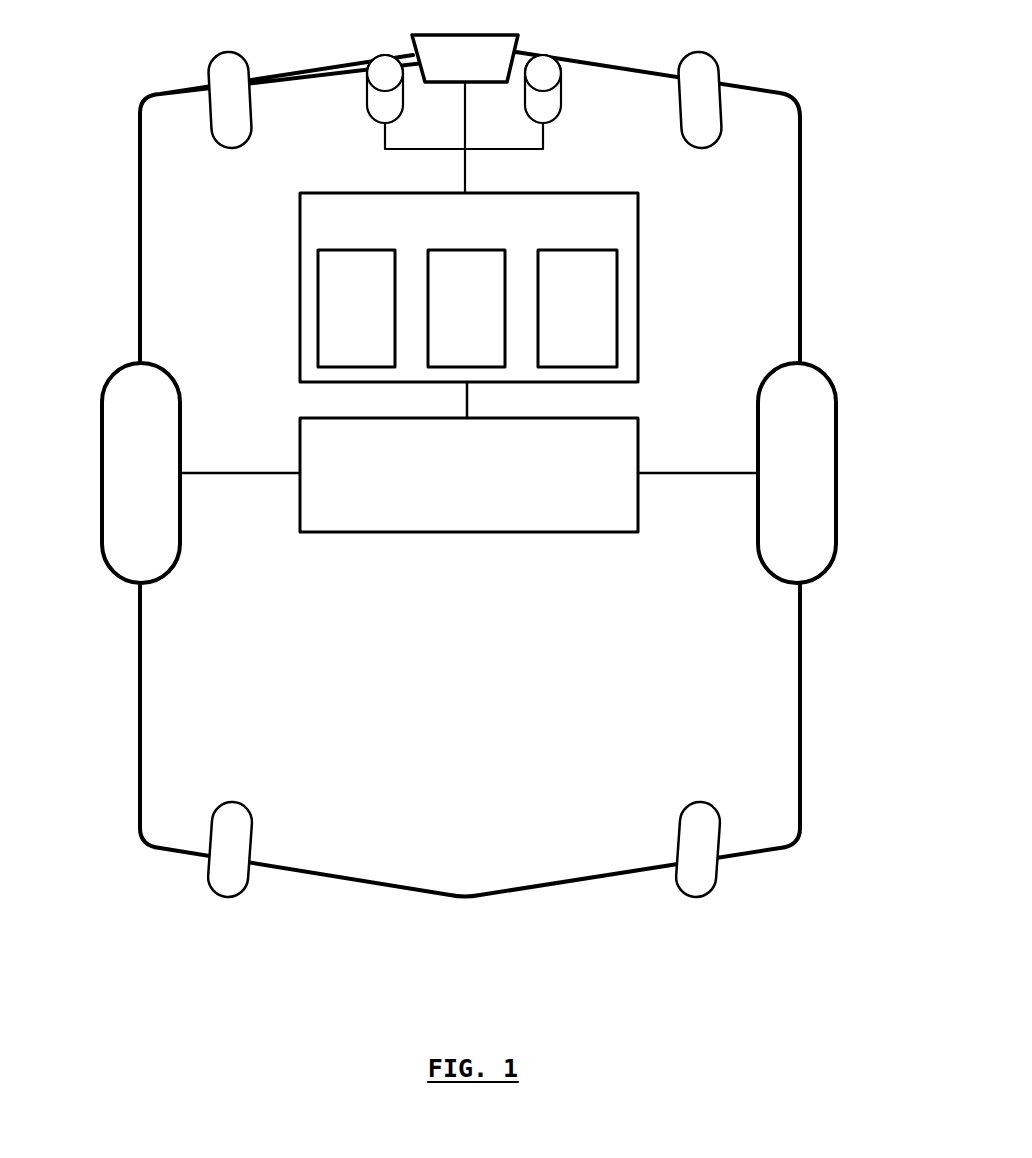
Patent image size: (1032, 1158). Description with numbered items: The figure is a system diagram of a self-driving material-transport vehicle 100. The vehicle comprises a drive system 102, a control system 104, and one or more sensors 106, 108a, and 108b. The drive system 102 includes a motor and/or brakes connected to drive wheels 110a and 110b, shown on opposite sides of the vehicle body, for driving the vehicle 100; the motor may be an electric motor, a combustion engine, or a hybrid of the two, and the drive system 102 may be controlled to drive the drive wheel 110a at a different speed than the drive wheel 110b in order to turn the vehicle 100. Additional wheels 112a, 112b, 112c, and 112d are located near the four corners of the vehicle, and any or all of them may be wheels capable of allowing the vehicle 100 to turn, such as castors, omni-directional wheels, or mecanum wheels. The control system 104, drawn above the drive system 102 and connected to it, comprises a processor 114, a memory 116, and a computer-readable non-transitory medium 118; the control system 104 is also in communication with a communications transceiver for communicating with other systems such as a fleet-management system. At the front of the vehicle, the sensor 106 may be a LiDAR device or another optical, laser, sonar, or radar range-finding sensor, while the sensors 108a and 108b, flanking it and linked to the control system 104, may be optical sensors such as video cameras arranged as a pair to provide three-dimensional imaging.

The self-driving material-transport vehicle 100 is at (450, 788).
The drive system 102 is at (444, 480).
The control system 104 is at (443, 235).
The sensor 106 is at (443, 68).
The sensor 108a is at (367, 88).
The sensor 108b is at (563, 88).
The drive wheel 110a is at (100, 475).
The drive wheel 110b is at (837, 475).
The wheel 112a is at (210, 73).
The wheel 112b is at (765, 57).
The wheel 112c is at (208, 871).
The wheel 112d is at (718, 871).
The processor 114 is at (334, 312).
The memory 116 is at (444, 312).
The computer-readable non-transitory medium 118 is at (556, 312).